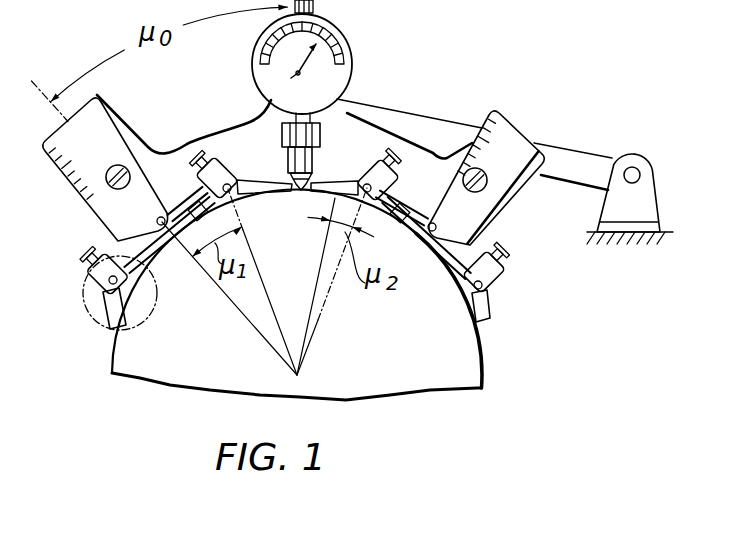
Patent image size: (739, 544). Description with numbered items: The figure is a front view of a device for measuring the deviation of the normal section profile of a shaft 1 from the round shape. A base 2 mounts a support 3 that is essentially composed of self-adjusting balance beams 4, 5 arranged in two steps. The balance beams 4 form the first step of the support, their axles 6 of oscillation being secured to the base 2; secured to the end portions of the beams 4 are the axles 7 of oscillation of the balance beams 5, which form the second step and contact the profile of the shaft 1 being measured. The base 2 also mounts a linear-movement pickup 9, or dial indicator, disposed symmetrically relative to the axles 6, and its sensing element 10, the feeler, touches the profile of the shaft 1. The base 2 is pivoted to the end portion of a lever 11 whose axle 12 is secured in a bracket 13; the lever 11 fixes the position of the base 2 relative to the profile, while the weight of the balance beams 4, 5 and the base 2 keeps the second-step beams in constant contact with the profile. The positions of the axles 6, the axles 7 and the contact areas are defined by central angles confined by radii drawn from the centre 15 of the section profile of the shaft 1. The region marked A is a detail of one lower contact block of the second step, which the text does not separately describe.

The shaft 1 is at (483, 378).
The base 2 is at (229, 132).
The support 3 is at (108, 241).
The balance beams 4 is at (413, 197).
The balance beams 5 is at (484, 314).
The axles of oscillation 6 is at (437, 224).
The axles of oscillation 7 is at (482, 289).
The linear-movement pickup 9 is at (340, 83).
The sensing element 10 is at (312, 178).
The lever 11 is at (590, 160).
The axle 12 is at (636, 168).
The bracket 13 is at (622, 230).
The centre 15 is at (300, 373).
The detail region A is at (82, 290).